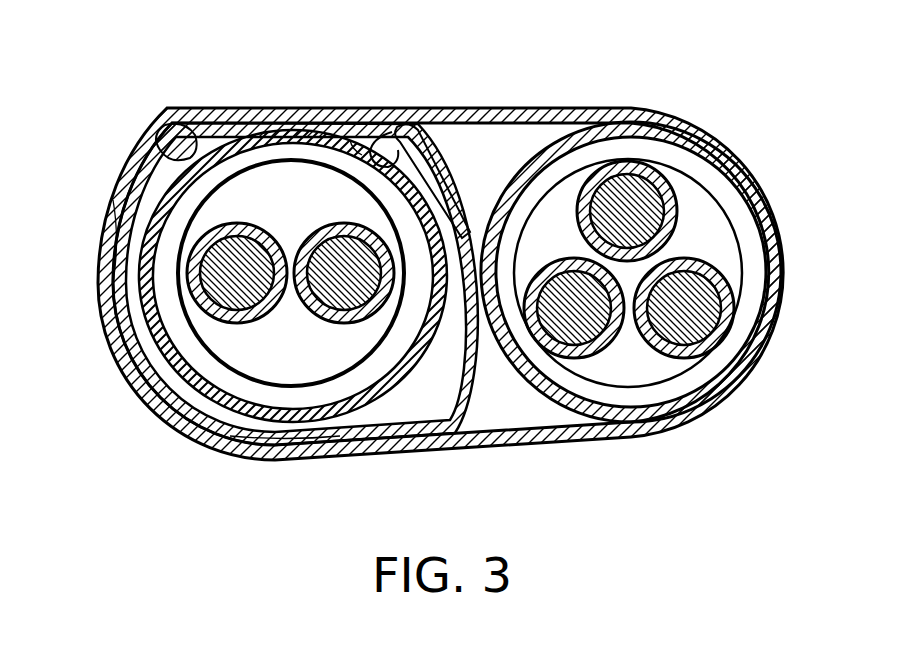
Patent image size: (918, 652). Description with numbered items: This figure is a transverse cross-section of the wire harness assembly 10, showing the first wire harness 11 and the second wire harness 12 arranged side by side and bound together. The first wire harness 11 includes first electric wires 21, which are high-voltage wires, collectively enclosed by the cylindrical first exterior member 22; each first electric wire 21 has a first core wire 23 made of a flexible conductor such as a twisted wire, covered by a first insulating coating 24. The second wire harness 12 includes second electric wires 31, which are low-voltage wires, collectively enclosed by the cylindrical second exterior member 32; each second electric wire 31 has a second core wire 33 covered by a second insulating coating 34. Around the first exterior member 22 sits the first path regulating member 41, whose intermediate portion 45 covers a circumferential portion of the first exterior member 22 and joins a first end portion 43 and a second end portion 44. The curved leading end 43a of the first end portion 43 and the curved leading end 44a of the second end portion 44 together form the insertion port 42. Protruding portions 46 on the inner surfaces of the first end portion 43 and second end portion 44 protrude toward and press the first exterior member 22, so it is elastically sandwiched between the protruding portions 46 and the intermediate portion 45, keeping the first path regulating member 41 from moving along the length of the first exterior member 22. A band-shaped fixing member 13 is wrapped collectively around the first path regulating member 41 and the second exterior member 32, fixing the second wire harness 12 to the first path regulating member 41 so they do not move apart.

The composite cable 10 is at (734, 80).
The first wire harness 11 is at (270, 274).
The second wire harness 12 is at (640, 304).
The fixing member 13 is at (520, 108).
The first electric wire 21 is at (290, 271).
The first exterior member 22 is at (128, 206).
The first core wire 23 is at (287, 246).
The first insulating coating 24 is at (253, 265).
The second electric wire 31 is at (629, 324).
The second exterior member 32 is at (530, 400).
The second core wire 33 is at (650, 221).
The second insulating coating 34 is at (667, 170).
The first path regulating member 41 is at (407, 398).
The insertion port 42 is at (374, 128).
The first end portion 43 is at (162, 135).
The leading end 43a is at (190, 140).
The second end portion 44 is at (432, 120).
The leading end 44a is at (398, 132).
The intermediate portion 45 is at (285, 438).
The protruding portion 46 is at (355, 140).